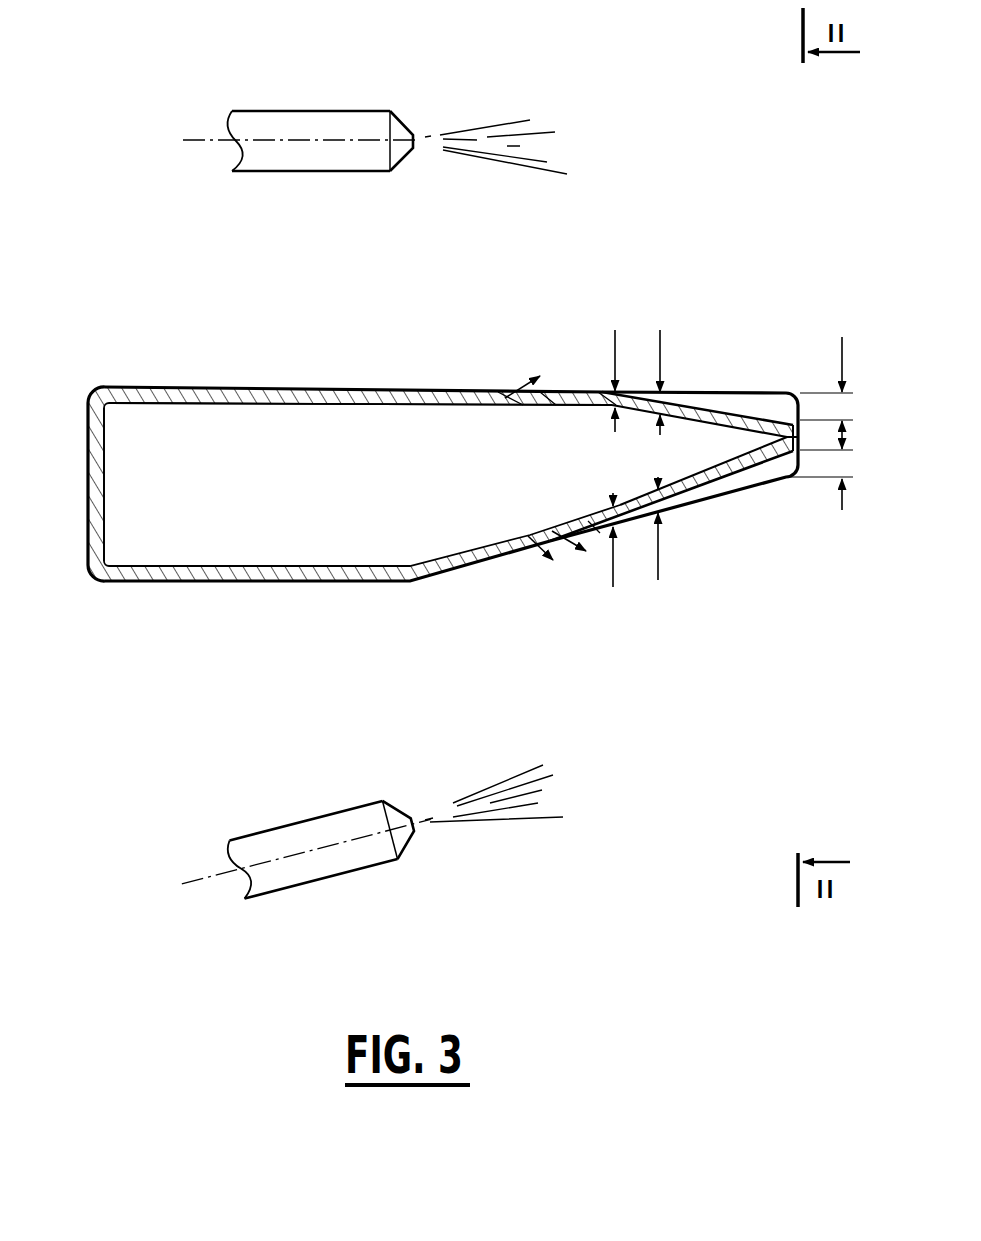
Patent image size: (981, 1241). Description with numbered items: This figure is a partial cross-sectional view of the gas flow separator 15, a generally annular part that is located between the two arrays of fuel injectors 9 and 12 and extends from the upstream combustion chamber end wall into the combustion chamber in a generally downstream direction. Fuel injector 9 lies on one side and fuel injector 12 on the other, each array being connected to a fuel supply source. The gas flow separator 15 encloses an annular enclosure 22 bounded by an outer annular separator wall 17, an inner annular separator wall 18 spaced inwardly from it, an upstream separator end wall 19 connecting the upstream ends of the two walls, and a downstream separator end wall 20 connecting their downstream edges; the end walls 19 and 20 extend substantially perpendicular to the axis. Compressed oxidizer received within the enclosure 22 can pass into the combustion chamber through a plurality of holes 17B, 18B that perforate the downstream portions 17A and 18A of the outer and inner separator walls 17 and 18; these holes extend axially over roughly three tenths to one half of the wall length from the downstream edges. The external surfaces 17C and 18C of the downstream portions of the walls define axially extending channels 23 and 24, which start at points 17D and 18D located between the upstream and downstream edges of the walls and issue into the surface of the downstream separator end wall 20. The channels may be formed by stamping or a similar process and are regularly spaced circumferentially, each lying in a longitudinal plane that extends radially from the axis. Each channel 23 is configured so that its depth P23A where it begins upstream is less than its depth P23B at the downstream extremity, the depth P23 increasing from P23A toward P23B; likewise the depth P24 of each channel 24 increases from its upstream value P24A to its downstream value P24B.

The fuel injector array 9 is at (318, 125).
The fuel injector array 12 is at (277, 838).
The gas flow separator 15 is at (387, 378).
The outer annular separator wall 17 is at (220, 387).
The downstream portion of outer separator wall 17A is at (522, 403).
The holes 17B is at (547, 404).
The external surface of outer separator wall 17C is at (756, 382).
The channel starting point 17D is at (604, 387).
The inner annular separator wall 18 is at (235, 583).
The downstream portion of inner separator wall 18A is at (528, 533).
The holes 18B is at (550, 530).
The external surface of inner separator wall 18C is at (711, 503).
The channel starting point 18D is at (596, 536).
The upstream separator end wall 19 is at (90, 440).
The downstream separator end wall 20 is at (772, 437).
The annular enclosure 22 is at (272, 490).
The channel 23 is at (703, 400).
The channel 24 is at (676, 502).
The channel depth P23 is at (660, 345).
The upstream channel depth P23A is at (615, 338).
The downstream channel depth P23B is at (843, 345).
The channel depth P24 is at (658, 568).
The upstream channel depth P24A is at (613, 568).
The downstream channel depth P24B is at (842, 510).